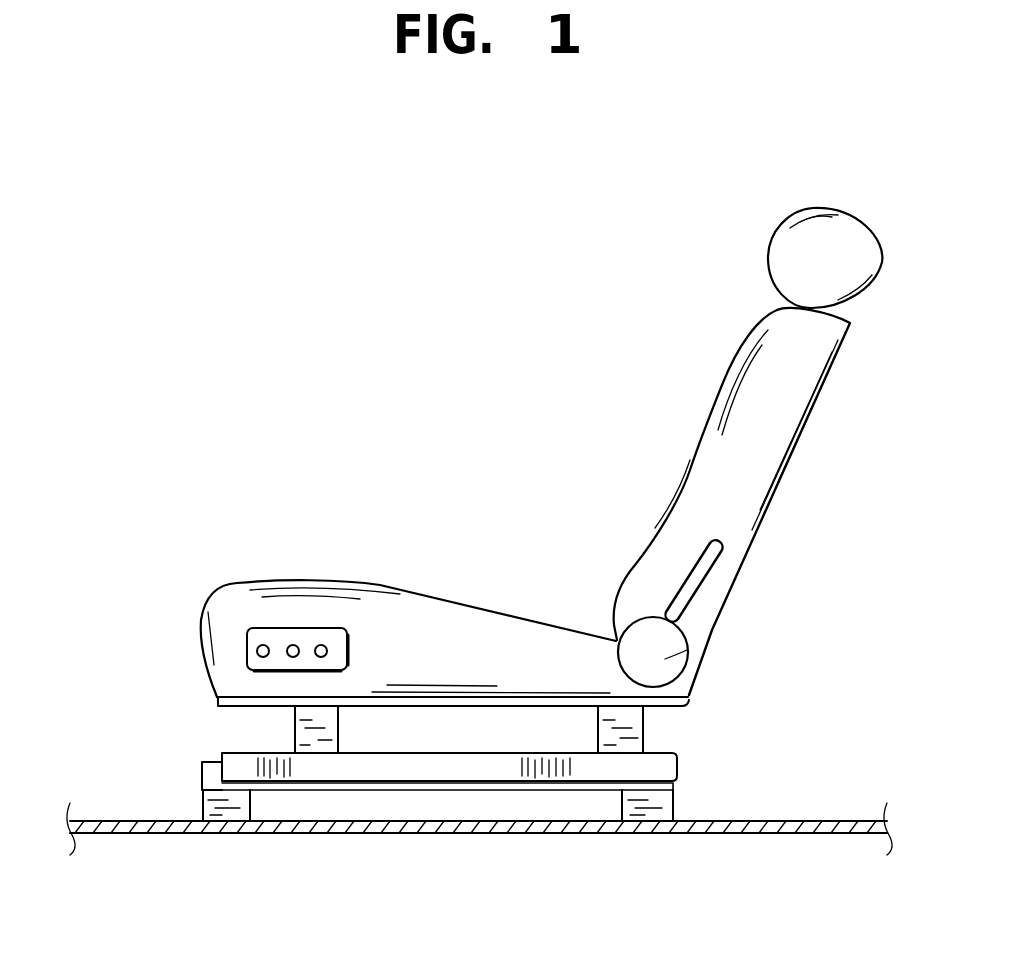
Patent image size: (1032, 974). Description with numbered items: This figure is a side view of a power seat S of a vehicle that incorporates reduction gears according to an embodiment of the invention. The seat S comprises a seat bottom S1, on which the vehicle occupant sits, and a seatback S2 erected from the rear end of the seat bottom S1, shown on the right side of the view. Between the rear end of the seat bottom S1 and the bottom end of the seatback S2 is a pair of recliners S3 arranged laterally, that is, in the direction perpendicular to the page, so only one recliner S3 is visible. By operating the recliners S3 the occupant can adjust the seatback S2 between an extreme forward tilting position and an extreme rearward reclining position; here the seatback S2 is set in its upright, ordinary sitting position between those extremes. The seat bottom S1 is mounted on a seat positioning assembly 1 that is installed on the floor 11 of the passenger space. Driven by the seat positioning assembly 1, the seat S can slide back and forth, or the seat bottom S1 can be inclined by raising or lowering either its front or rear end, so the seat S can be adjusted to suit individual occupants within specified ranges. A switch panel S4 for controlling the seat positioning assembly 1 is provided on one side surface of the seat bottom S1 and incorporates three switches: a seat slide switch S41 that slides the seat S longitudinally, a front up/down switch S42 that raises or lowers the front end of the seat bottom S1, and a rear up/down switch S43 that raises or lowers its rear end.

The power seat S is at (547, 452).
The seat bottom S1 is at (440, 623).
The seatback S2 is at (670, 514).
The recliner S3 is at (706, 652).
The switch panel S4 is at (337, 500).
The seat slide switch S41 is at (260, 644).
The front up/down switch S42 is at (293, 644).
The rear up/down switch S43 is at (322, 644).
The seat positioning assembly 1 is at (174, 775).
The floor 11 is at (730, 820).